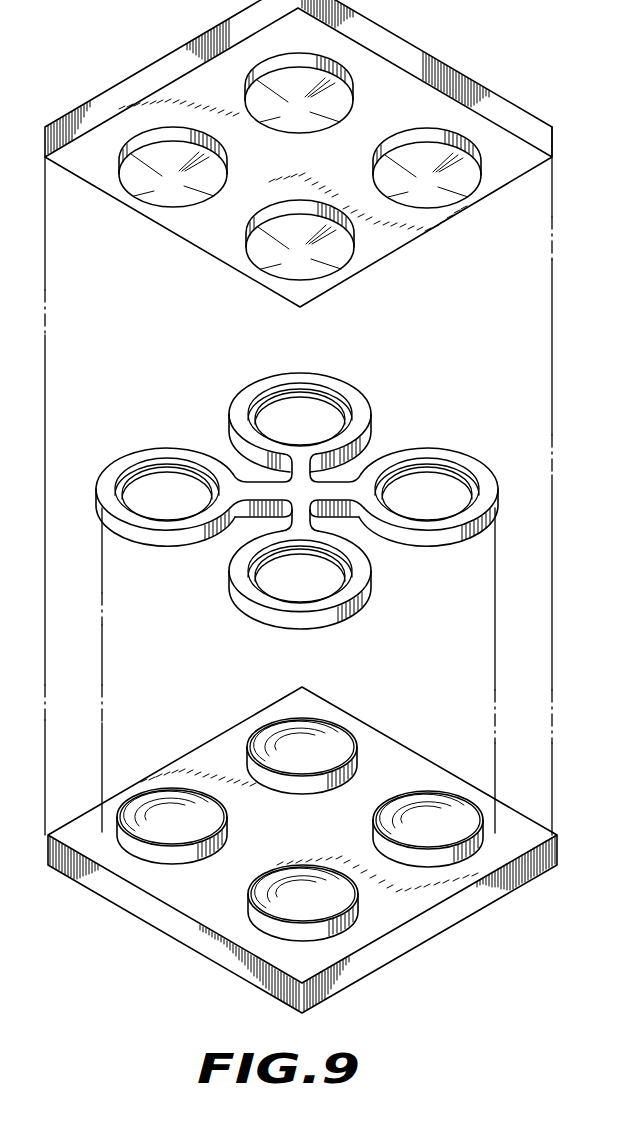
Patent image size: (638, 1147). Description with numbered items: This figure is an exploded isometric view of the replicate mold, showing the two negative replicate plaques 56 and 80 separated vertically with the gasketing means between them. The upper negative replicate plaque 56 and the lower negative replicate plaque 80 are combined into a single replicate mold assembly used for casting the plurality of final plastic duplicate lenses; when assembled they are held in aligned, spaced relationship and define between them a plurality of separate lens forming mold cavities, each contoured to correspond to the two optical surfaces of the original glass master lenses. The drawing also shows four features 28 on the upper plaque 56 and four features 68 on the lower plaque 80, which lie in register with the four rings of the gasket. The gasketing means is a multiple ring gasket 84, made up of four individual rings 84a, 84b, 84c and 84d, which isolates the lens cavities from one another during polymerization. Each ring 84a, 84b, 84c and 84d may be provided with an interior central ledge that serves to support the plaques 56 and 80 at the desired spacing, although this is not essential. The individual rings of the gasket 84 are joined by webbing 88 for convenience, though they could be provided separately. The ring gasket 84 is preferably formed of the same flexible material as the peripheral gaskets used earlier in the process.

The apertures in top plate 28 is at (208, 172).
The negative replicate plaque 56 is at (517, 158).
The bosses on bottom plate 68 is at (203, 830).
The negative replicate plaque 80 is at (503, 822).
The multiple ring gasket 84 is at (414, 426).
The ring 84a is at (288, 418).
The ring 84b is at (165, 484).
The ring 84c is at (300, 589).
The ring 84d is at (443, 489).
The webbing 88 is at (305, 492).